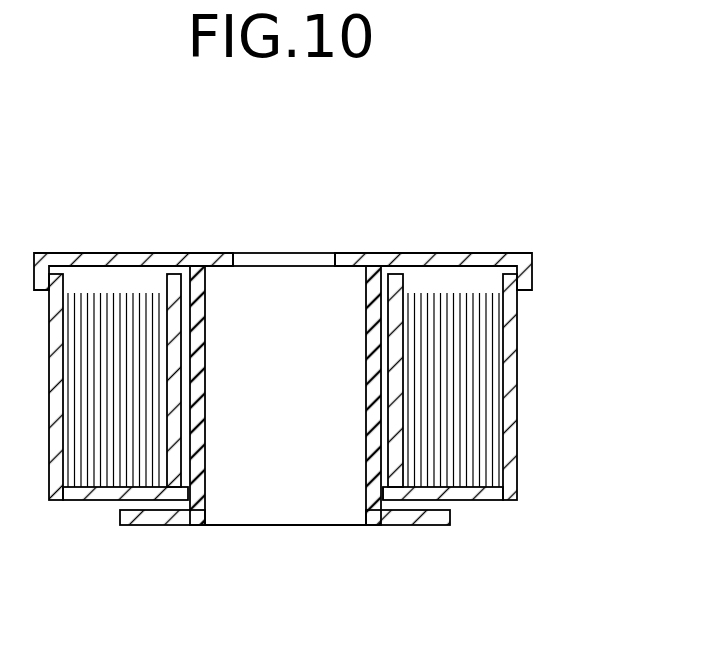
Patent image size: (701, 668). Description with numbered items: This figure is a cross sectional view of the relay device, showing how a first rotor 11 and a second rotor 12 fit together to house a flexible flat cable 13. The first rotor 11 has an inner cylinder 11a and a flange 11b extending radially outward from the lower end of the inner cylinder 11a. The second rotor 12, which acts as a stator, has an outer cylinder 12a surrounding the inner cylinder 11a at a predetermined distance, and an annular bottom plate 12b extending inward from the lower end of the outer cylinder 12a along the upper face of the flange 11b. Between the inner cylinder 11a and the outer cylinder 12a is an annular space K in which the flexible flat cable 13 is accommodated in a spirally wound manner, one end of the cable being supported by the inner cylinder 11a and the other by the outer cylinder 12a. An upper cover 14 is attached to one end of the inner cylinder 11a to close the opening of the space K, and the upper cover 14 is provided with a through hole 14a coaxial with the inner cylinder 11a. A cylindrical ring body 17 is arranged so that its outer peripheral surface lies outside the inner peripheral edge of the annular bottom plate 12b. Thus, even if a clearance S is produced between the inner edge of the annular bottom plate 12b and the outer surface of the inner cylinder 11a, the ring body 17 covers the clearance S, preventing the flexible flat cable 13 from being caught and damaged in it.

The upper cover 14 is at (283, 223).
The through hole 14a is at (327, 253).
The annular space K is at (455, 280).
The outer cylinder 12a is at (519, 320).
The flexible flat cable 13 is at (483, 373).
The second rotor 12 is at (509, 429).
The ring body 17 is at (407, 458).
The inner cylinder 11a is at (366, 413).
The clearance S is at (385, 495).
The flange 11b is at (157, 525).
The first rotor 11 is at (422, 527).
The annular bottom plate 12b is at (492, 500).